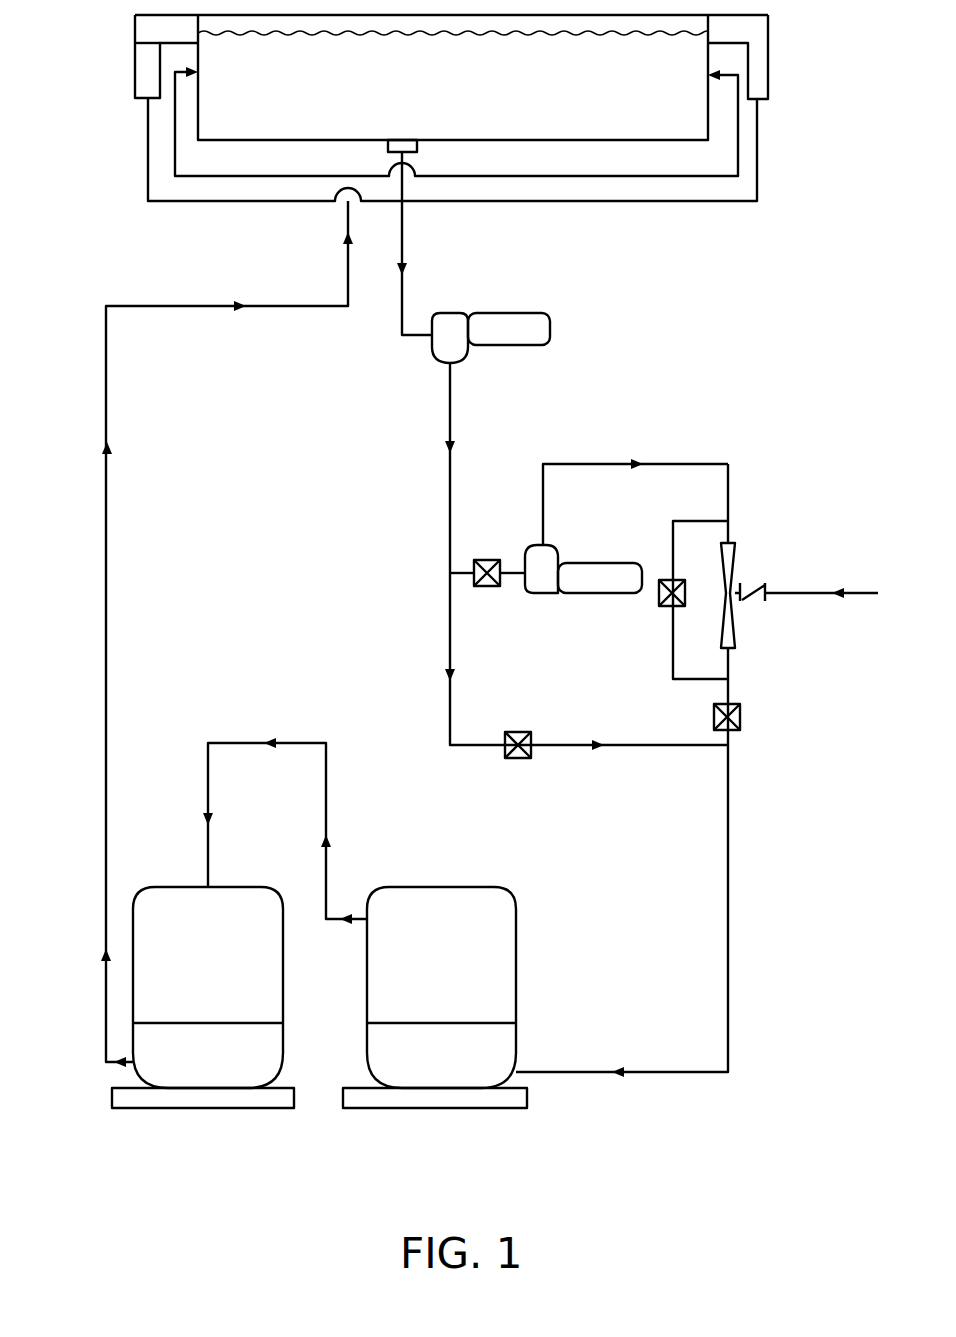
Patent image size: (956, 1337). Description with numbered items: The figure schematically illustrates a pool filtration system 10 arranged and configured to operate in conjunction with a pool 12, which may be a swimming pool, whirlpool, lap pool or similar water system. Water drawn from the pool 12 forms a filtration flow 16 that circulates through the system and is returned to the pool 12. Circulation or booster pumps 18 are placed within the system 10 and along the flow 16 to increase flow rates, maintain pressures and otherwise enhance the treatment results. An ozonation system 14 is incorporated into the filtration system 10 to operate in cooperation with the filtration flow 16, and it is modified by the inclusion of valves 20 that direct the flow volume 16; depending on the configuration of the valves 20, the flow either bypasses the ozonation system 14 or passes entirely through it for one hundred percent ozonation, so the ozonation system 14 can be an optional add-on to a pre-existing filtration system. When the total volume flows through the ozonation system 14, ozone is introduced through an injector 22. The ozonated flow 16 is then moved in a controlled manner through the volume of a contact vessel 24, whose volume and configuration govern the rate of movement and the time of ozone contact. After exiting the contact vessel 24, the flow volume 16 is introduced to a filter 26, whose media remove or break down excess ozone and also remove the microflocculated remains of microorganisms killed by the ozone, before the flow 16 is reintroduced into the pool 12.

The filtration system 10 is at (74, 166).
The pool 12 is at (434, 101).
The ozonation system 14 is at (657, 418).
The filtration flow 16 is at (107, 402).
The booster pump 18 is at (550, 328).
The valve 20 is at (490, 560).
The injector 22 is at (735, 552).
The contact vessel 24 is at (466, 979).
The filter 26 is at (218, 979).